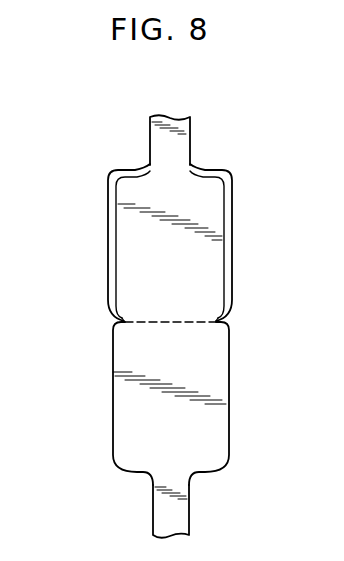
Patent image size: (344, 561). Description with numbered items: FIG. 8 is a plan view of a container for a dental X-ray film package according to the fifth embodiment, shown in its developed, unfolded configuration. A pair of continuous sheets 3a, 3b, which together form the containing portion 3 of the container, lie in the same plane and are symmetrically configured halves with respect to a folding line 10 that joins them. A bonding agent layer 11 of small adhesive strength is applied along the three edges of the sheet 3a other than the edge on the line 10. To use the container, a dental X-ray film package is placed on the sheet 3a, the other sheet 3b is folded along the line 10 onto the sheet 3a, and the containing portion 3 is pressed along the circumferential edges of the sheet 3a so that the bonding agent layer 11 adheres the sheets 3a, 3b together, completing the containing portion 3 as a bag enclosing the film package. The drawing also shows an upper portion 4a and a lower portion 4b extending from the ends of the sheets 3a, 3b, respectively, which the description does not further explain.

The upper lead wire 4a is at (178, 143).
The upper glass bulb portion 3a is at (212, 249).
The metal cap 11 is at (108, 232).
The glass envelope 3 is at (106, 319).
The joint 10 is at (168, 322).
The lower glass bulb portion 3b is at (217, 388).
The lower lead wire 4b is at (183, 516).